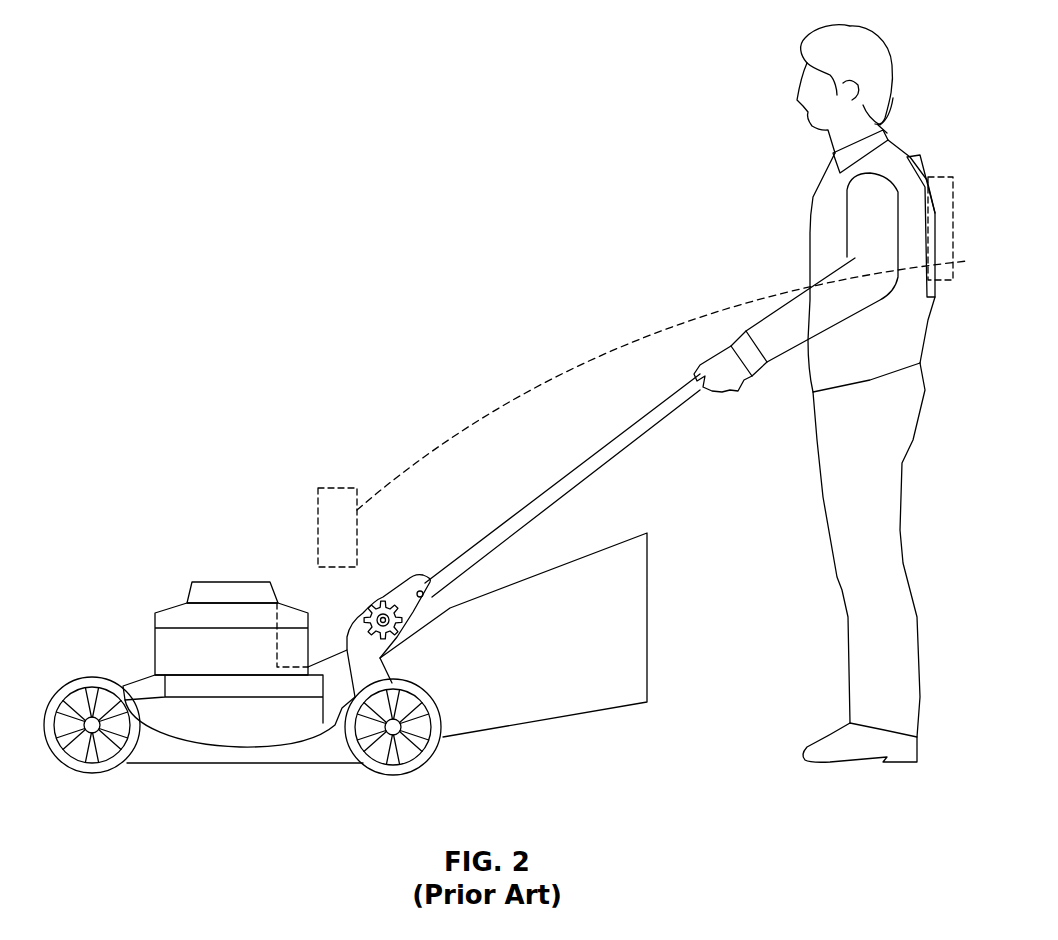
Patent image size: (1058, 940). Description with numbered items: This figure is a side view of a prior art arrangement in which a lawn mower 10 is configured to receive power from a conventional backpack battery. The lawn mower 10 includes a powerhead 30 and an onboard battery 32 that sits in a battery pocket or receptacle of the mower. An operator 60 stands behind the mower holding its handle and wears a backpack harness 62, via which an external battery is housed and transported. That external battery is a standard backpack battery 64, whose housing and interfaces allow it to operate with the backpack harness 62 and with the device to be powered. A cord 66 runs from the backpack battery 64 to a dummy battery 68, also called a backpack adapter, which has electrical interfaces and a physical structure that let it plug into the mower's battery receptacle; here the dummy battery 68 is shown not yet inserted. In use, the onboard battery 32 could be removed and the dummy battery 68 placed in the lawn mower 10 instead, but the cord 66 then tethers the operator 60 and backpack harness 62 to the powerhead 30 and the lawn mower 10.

The lawn mower 10 is at (147, 423).
The powerhead 30 is at (225, 613).
The onboard battery 32 is at (290, 635).
The operator 60 is at (833, 175).
The backpack harness 62 is at (932, 298).
The backpack battery 64 is at (942, 177).
The cord 66 is at (507, 403).
The dummy battery 68 is at (332, 487).